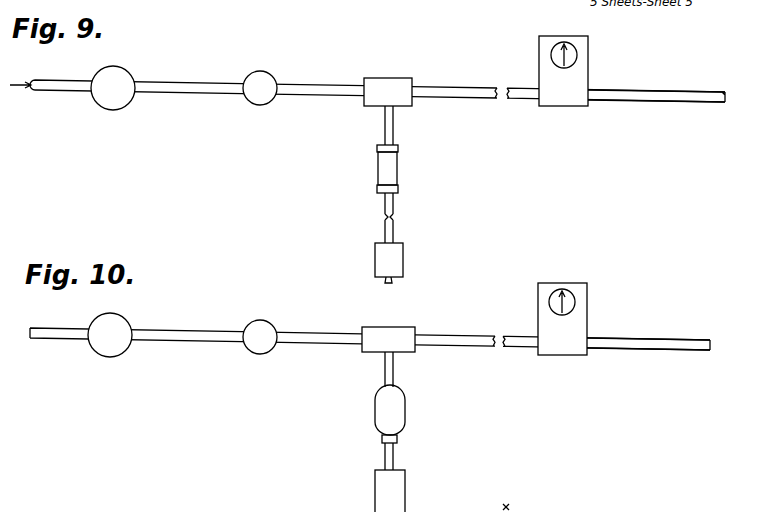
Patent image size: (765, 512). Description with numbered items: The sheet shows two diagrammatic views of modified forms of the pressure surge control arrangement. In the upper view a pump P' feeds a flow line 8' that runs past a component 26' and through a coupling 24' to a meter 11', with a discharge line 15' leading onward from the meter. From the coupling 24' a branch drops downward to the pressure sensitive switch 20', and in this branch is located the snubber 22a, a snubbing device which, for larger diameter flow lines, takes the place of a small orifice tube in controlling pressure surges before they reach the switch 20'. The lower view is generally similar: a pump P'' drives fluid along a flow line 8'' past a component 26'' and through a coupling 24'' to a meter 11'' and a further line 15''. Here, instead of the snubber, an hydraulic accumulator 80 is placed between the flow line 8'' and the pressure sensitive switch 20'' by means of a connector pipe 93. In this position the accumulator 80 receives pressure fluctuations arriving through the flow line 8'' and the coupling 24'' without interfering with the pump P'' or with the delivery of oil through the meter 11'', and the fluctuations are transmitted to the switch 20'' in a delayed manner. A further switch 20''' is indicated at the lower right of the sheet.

In FIG. 9, the pump P' is at (125, 79).
In FIG. 9, the filter 26' is at (276, 76).
In FIG. 9, the flow line 8' is at (377, 75).
In FIG. 9, the coupling 24' is at (399, 77).
In FIG. 9, the meter 11' is at (581, 71).
In FIG. 9, the discharge pipe 15' is at (656, 74).
In FIG. 9, the snubber 22a is at (400, 173).
In FIG. 9, the pressure sensitive switch 20' is at (411, 263).
In FIG. 10, the pump P'' is at (124, 327).
In FIG. 10, the filter 26'' is at (277, 325).
In FIG. 10, the flow line 8'' is at (370, 325).
In FIG. 10, the coupling 24'' is at (405, 325).
In FIG. 10, the meter 11'' is at (582, 319).
In FIG. 10, the discharge pipe 15'' is at (648, 331).
In FIG. 10, the reservoir bulb 80 is at (406, 404).
In FIG. 10, the connector pipe 93 is at (395, 454).
In FIG. 10, the pressure sensitive switch 20'' is at (414, 491).
In FIG. 10, the nozzle 20''' is at (595, 507).